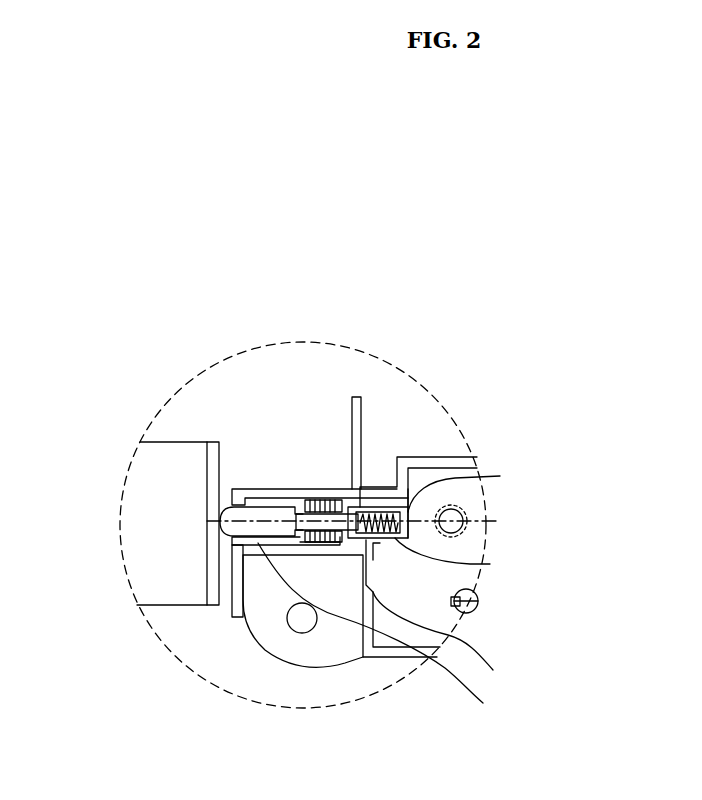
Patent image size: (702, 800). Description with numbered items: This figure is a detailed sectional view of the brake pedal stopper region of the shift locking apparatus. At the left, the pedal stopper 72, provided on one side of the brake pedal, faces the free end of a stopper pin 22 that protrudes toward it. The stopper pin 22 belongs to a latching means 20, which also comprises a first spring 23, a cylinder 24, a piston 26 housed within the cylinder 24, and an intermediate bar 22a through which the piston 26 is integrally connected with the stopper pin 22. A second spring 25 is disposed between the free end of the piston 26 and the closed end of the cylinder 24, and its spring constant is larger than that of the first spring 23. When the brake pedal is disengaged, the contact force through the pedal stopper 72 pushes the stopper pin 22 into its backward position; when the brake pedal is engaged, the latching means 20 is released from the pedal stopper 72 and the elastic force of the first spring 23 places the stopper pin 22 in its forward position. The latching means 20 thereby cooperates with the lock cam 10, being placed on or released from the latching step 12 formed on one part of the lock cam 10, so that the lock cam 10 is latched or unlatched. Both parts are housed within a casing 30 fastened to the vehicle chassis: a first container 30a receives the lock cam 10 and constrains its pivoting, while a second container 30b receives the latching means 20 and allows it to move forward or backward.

The lock cam 10 is at (482, 496).
The latching step 12 is at (490, 564).
The latching means 20 is at (258, 241).
The stopper pin 22 is at (264, 524).
The intermediate bar 22a is at (324, 514).
The first spring 23 is at (307, 496).
The cylinder 24 is at (391, 512).
The second spring 25 is at (372, 513).
The piston 26 is at (344, 502).
The casing 30 is at (539, 658).
The first container 30a is at (451, 637).
The second container 30b is at (388, 629).
The pedal stopper 72 is at (145, 528).